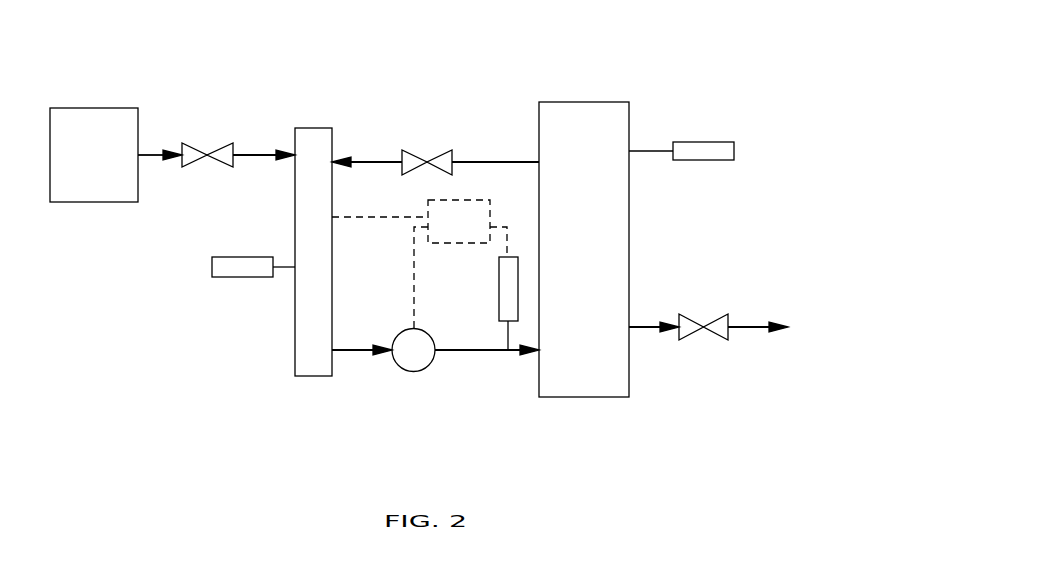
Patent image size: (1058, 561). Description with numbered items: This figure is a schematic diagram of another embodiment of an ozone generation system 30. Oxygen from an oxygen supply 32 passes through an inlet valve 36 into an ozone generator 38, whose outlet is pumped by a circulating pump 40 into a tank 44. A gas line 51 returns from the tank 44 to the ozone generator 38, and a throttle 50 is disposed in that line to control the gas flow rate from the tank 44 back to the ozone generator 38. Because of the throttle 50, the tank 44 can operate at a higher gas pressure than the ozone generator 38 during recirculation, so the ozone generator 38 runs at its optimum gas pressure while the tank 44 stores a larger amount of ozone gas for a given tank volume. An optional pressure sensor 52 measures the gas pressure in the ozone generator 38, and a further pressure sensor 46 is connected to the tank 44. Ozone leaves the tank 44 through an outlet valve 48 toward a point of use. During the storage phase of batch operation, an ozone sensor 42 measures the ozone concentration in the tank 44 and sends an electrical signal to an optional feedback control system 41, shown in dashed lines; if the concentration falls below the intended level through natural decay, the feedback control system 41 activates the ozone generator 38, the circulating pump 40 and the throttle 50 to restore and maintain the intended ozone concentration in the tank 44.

The ozone generation system 30 is at (136, 69).
The oxygen supply 32 is at (82, 191).
The inlet valve 36 is at (192, 145).
The ozone generator 38 is at (295, 313).
The circulating pump 40 is at (415, 373).
The feedback control system 41 is at (419, 264).
The ozone sensor 42 is at (499, 288).
The tank 44 is at (572, 181).
The pressure sensor 46 is at (703, 142).
The outlet valve 48 is at (686, 340).
The throttle 50 is at (445, 150).
The gas line 51 is at (475, 162).
The pressure sensor 52 is at (212, 266).